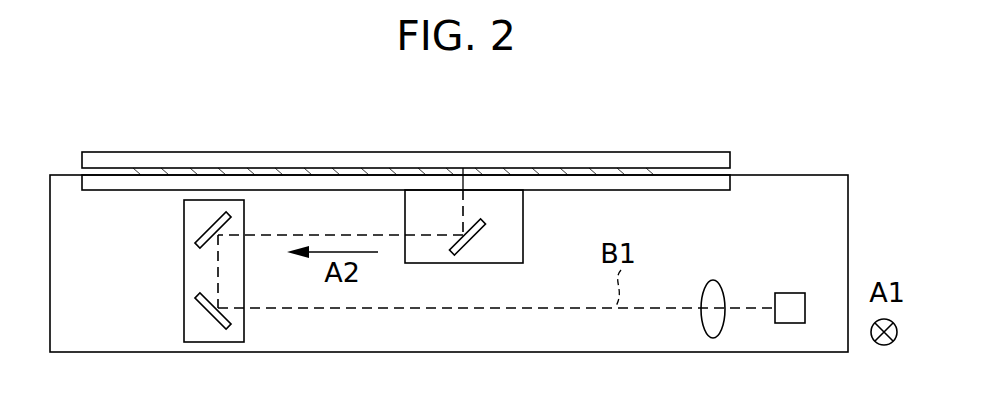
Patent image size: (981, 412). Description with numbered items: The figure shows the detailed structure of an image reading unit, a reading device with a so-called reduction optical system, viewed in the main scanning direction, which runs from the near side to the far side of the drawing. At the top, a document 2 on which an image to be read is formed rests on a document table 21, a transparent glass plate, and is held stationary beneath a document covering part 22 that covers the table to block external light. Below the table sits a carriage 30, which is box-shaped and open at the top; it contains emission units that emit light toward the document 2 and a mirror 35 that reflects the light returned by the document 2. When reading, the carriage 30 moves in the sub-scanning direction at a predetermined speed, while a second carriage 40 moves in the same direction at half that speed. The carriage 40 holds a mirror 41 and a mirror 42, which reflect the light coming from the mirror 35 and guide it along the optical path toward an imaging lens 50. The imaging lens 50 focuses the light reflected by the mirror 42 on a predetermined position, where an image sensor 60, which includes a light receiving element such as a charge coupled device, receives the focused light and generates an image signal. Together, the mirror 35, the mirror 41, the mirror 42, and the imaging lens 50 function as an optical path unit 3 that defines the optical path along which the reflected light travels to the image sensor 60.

The document 2 is at (411, 170).
The document table 21 is at (646, 191).
The document covering part 22 is at (676, 151).
The optical path unit 3 is at (580, 338).
The carriage 30 is at (524, 238).
The mirror 35 is at (470, 245).
The carriage 40 is at (183, 270).
The mirror 41 is at (204, 222).
The mirror 42 is at (210, 320).
The imaging lens 50 is at (722, 285).
The image sensor 60 is at (786, 292).